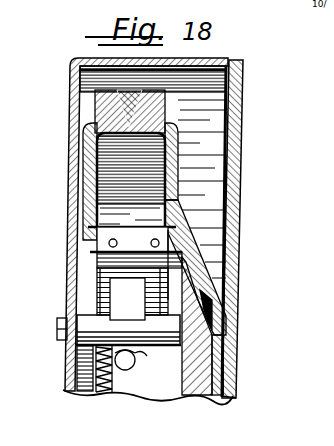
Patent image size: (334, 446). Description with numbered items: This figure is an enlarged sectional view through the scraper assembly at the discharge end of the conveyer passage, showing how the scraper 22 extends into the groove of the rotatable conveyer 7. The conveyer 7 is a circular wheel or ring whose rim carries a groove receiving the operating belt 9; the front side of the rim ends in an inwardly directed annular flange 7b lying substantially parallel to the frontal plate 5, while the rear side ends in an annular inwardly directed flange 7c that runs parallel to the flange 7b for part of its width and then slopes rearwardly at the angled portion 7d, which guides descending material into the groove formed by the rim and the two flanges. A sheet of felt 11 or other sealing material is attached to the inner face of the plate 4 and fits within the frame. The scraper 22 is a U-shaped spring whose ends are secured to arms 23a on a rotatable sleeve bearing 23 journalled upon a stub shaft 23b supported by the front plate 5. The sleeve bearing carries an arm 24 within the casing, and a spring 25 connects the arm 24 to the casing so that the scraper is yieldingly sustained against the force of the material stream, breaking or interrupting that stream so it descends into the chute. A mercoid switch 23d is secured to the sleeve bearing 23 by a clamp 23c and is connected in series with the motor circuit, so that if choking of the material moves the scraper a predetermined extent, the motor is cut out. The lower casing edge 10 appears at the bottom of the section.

The plate 4 is at (238, 215).
The frontal plate 5 is at (67, 213).
The rotatable conveyer 7 is at (83, 123).
The annular flange 7b is at (82, 166).
The annular inwardly directed flange 7c is at (227, 167).
The sloping portion 7d is at (228, 253).
The operating belt 9 is at (80, 102).
The lower casing edge 10 is at (220, 392).
The sheet of felt 11 is at (233, 370).
The scraper 22 is at (165, 305).
The rotatable sleeve bearing 23 is at (172, 322).
The arms 23a is at (100, 277).
The stub shaft 23b is at (223, 341).
The clamp 23c is at (140, 360).
The mercoid switch 23d is at (123, 362).
The arm 24 is at (62, 337).
The spring 25 is at (97, 393).